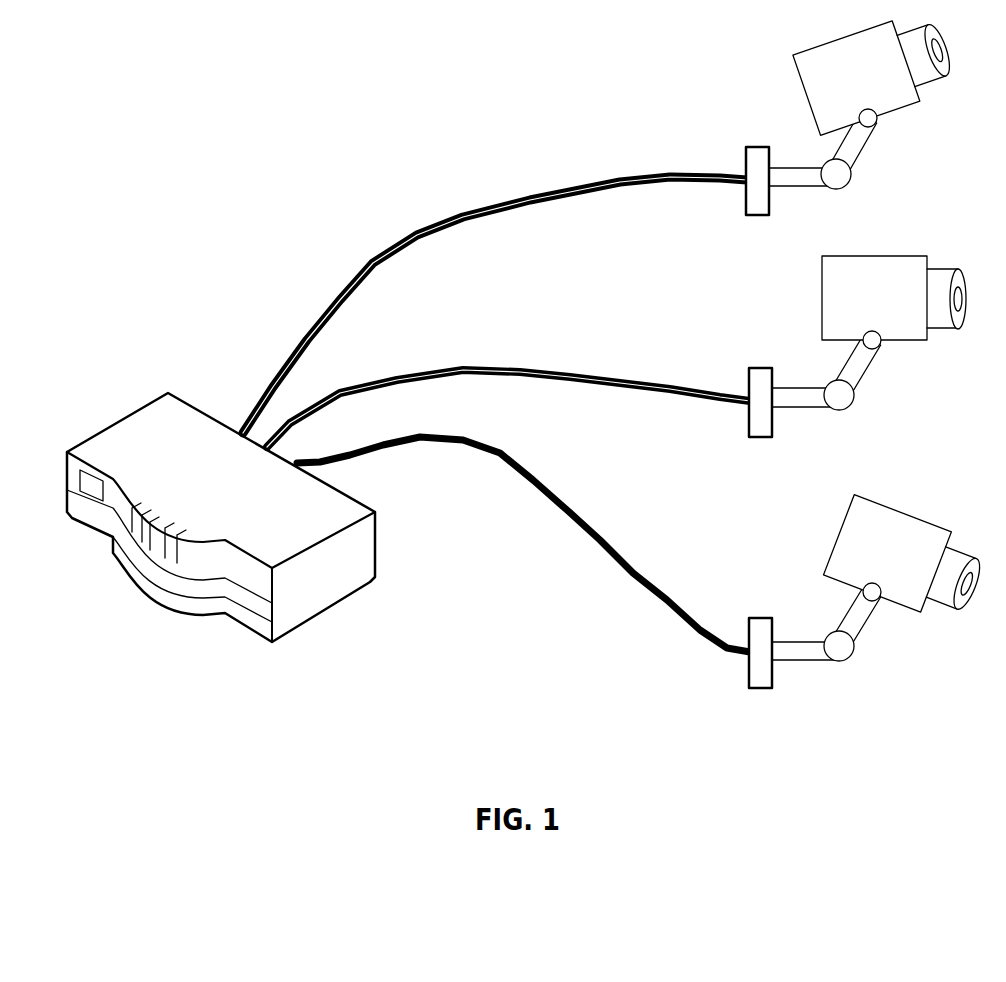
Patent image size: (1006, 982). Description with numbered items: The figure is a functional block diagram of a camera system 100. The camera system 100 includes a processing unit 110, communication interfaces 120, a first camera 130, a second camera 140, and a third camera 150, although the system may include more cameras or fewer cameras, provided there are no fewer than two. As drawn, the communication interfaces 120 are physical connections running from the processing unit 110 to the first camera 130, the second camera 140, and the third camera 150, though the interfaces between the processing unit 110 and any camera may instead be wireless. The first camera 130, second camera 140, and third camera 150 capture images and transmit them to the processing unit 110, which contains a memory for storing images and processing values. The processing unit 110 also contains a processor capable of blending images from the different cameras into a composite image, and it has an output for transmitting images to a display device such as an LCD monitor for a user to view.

The camera system 100 is at (277, 200).
The processing unit 110 is at (144, 393).
The communication interfaces 120 is at (514, 191).
The first camera 130 is at (807, 102).
The second camera 140 is at (812, 305).
The third camera 150 is at (820, 545).